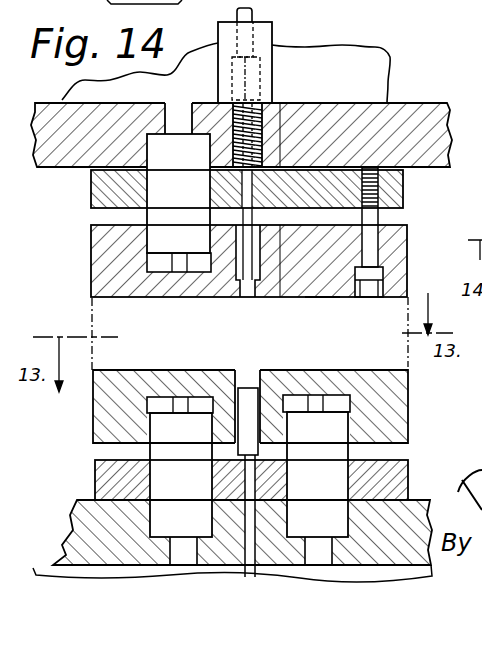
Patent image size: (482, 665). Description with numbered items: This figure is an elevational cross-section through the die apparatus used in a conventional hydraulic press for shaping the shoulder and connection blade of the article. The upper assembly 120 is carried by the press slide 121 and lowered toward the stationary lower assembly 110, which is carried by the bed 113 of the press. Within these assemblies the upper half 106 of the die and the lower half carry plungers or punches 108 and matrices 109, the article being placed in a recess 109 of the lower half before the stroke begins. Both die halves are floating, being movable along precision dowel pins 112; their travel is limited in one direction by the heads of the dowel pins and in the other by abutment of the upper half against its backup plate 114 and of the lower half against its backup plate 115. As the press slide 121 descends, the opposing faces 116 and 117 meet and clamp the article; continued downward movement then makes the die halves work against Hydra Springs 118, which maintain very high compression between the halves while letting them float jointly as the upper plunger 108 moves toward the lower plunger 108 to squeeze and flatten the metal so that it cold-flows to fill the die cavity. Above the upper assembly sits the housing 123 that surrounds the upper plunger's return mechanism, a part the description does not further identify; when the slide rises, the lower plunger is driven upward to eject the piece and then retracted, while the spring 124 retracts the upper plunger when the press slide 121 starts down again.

The upper half of the die 106 is at (91, 262).
The plunger 108 is at (253, 368).
The matrix 109 is at (244, 387).
The lower assembly 110 is at (410, 462).
The precision dowel pin 112 is at (378, 217).
The bed 113 is at (70, 573).
The backup plate 114 is at (92, 197).
The backup plate 115 is at (95, 475).
The opposing face 116 is at (322, 297).
The opposing face 117 is at (335, 368).
The Hydra Spring 118 is at (193, 209).
The upper assembly 120 is at (395, 103).
The press slide 121 is at (378, 62).
The plunger housing 123 is at (253, 12).
The spring 124 is at (263, 105).